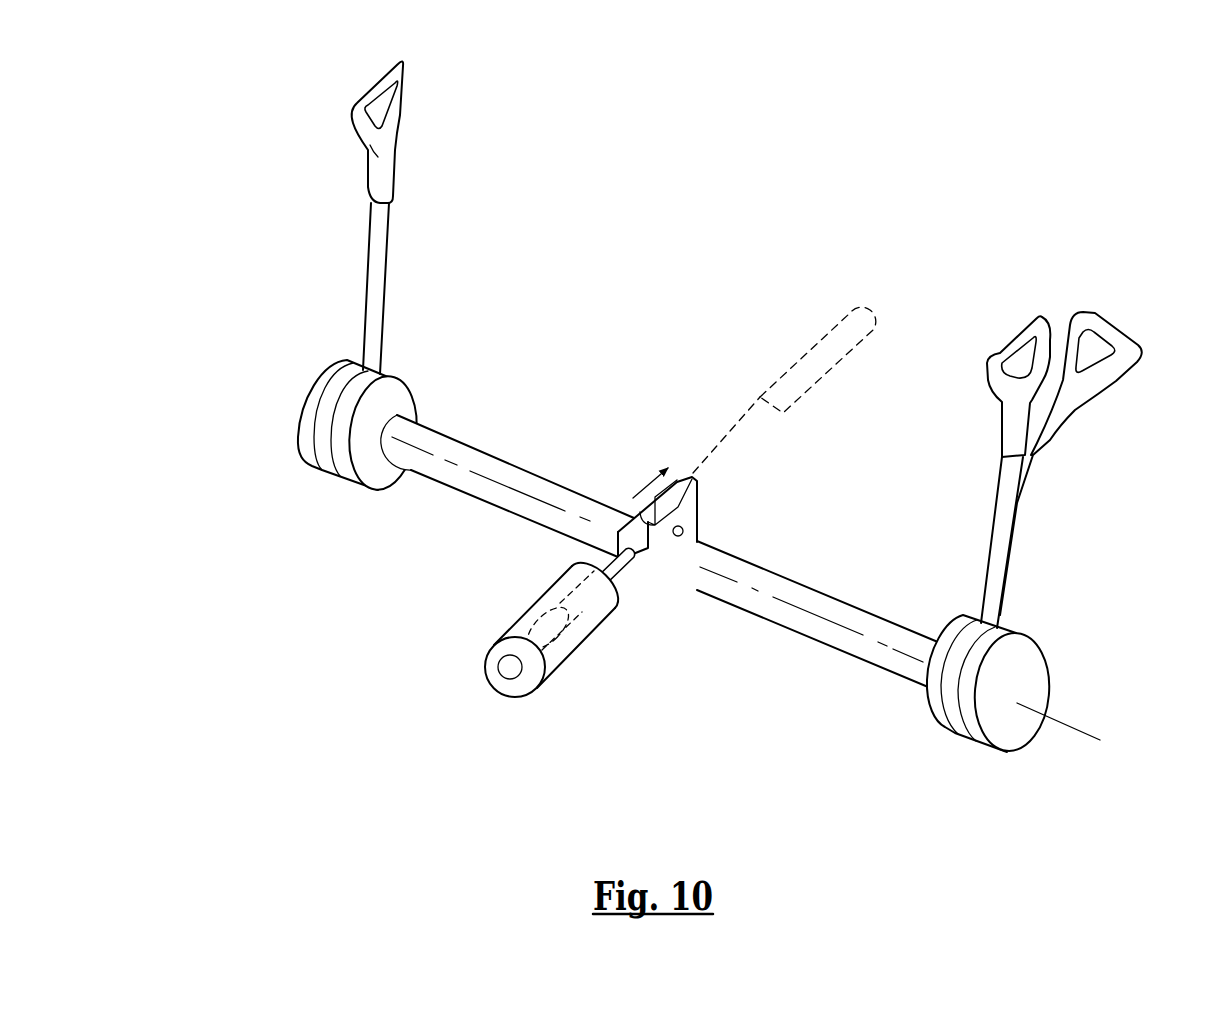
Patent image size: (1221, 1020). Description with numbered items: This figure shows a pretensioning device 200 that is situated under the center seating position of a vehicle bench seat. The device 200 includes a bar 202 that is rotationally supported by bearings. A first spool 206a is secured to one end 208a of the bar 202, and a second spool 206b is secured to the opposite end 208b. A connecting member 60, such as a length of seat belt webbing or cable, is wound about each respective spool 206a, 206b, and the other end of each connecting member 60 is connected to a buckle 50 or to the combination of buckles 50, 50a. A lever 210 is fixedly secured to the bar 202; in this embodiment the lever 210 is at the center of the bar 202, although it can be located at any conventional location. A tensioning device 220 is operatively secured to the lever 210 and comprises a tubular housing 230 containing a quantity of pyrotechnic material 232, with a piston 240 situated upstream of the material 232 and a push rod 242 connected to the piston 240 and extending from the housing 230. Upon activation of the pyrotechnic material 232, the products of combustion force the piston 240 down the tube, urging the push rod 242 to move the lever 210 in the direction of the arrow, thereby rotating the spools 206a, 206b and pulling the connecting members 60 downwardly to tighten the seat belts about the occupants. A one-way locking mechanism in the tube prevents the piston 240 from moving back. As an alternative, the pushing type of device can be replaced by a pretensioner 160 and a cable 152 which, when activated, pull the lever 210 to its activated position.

The buckle 50 is at (398, 112).
The buckle 50a is at (1000, 370).
The connecting member 60 is at (393, 298).
The cable 152 is at (715, 455).
The pretensioner 160 is at (798, 358).
The pretensioning device 200 is at (717, 338).
The bar 202 is at (455, 453).
The first spool 206a is at (290, 427).
The second spool 206b is at (1033, 682).
The end of the bar 208a is at (410, 473).
The end of the bar 208b is at (893, 660).
The lever 210 is at (710, 498).
The tensioning device 220 is at (613, 730).
The tubular housing 230 is at (512, 618).
The pyrotechnic material 232 is at (509, 672).
The piston 240 is at (552, 657).
The push rod 242 is at (637, 483).